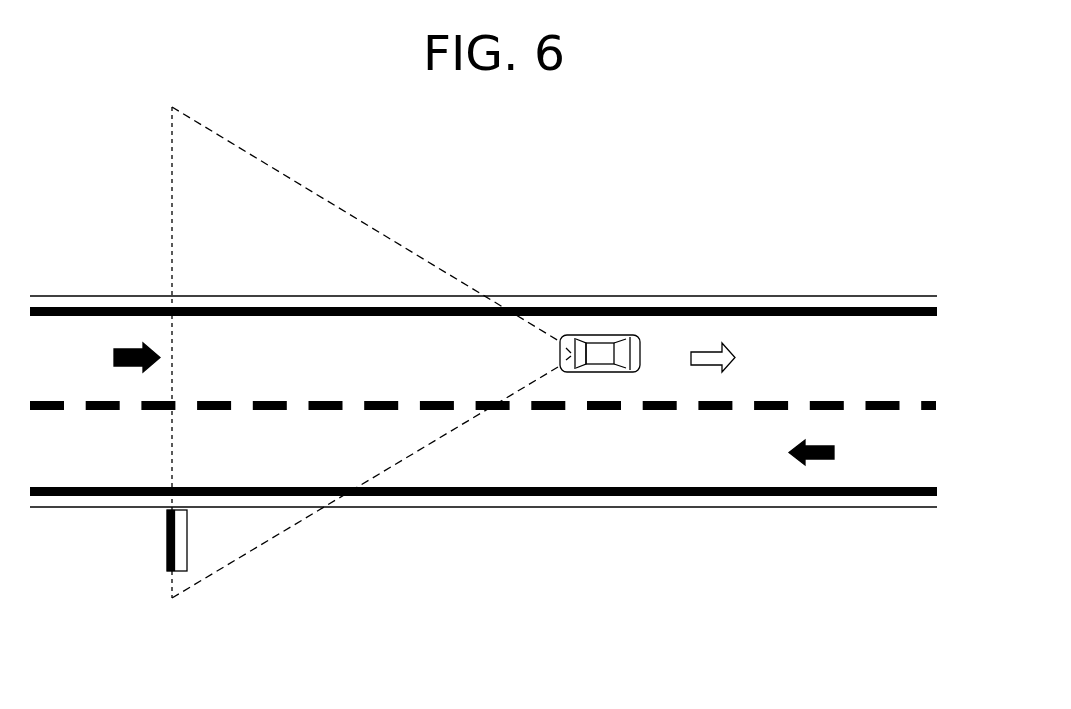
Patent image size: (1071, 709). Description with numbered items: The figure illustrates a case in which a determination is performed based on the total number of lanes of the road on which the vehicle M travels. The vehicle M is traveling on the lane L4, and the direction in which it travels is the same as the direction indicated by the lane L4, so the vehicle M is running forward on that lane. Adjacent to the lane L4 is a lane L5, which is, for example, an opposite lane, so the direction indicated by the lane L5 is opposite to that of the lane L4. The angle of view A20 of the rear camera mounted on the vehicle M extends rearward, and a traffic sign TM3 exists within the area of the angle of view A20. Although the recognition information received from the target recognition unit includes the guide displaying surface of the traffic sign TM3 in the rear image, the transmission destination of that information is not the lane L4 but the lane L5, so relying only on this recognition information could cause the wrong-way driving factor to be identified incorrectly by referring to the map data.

The lane L4 is at (67, 325).
The lane L5 is at (890, 465).
The vehicle M is at (592, 333).
The angle of view of the rear camera A20 is at (432, 265).
The traffic sign TM3 is at (188, 533).